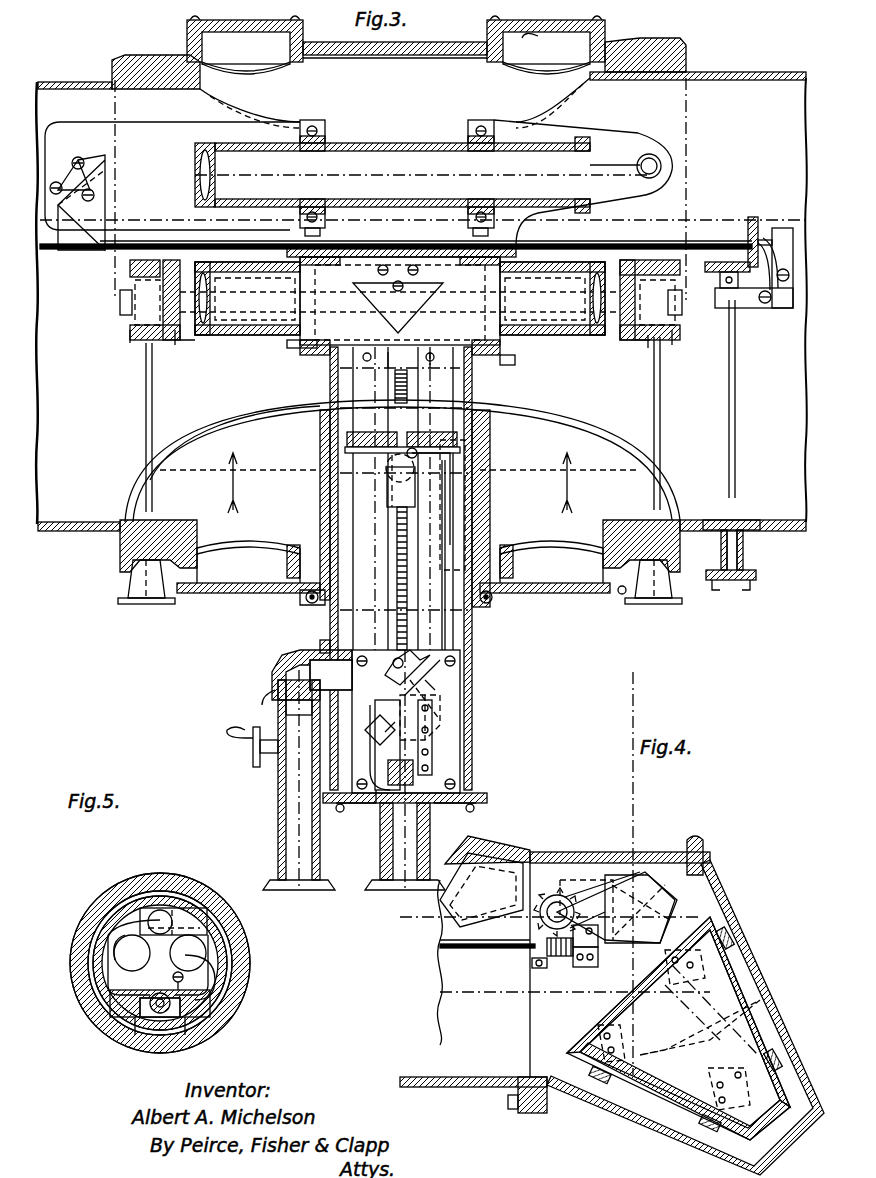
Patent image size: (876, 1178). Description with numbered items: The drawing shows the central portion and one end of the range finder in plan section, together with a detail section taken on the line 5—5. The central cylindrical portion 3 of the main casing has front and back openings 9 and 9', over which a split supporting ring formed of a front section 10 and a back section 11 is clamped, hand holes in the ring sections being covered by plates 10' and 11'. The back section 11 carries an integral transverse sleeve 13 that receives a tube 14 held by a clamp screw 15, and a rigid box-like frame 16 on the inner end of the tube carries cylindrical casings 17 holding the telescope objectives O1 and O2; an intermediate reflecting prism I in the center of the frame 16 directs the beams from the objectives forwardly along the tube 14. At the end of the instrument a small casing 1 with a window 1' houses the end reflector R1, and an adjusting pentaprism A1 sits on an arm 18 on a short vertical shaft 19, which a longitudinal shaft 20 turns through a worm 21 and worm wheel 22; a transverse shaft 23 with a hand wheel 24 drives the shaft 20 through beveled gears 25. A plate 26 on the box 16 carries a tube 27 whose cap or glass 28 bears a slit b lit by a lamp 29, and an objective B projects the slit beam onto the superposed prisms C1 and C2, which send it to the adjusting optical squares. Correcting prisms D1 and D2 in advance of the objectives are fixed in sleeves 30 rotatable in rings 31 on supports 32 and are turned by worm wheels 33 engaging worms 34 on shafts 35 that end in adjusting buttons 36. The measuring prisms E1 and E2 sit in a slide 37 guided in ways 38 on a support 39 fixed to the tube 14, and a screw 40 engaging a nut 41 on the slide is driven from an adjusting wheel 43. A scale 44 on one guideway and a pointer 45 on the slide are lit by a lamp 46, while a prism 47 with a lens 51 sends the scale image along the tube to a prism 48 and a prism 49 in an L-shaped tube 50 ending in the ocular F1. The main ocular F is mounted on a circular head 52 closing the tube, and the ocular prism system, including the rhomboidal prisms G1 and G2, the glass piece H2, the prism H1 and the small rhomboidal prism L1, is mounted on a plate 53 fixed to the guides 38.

In FIG. 4, the casing 1 is at (612, 1017).
In FIG. 4, the window 1' is at (555, 895).
In FIG. 3, the central cylindrical portion 3 is at (742, 88).
In FIG. 3, the section line 5 is at (400, 483).
In FIG. 3, the front opening 9 is at (395, 103).
In FIG. 3, the back opening 9' is at (235, 443).
In FIG. 3, the front section of supporting ring 10 is at (645, 42).
In FIG. 3, the cover plate 10' is at (396, 45).
In FIG. 3, the back section of supporting ring 11 is at (622, 609).
In FIG. 3, the cover plate 11' is at (422, 569).
In FIG. 3, the sleeve 13 is at (490, 460).
In FIG. 5, the sleeve 13 is at (242, 1008).
In FIG. 3, the tube 14 is at (480, 700).
In FIG. 5, the tube 14 is at (250, 969).
In FIG. 3, the clamp screw 15 is at (310, 602).
In FIG. 3, the box-like frame 16 is at (515, 362).
In FIG. 3, the cylindrical casing 17 is at (292, 350).
In FIG. 4, the arm 18 is at (598, 895).
In FIG. 4, the vertical shaft 19 is at (566, 900).
In FIG. 3, the longitudinal shaft 20 is at (700, 240).
In FIG. 4, the longitudinal shaft 20 is at (494, 950).
In FIG. 4, the worm 21 is at (560, 958).
In FIG. 4, the worm wheel 22 is at (546, 856).
In FIG. 3, the transverse shaft 23 is at (736, 418).
In FIG. 3, the hand wheel 24 is at (738, 590).
In FIG. 3, the beveled gears 25 is at (750, 242).
In FIG. 3, the plate 26 is at (366, 128).
In FIG. 3, the tube 27 is at (410, 140).
In FIG. 3, the cap or glass 28 is at (598, 136).
In FIG. 3, the electric lamp 29 is at (640, 174).
In FIG. 3, the sleeve 30 is at (186, 350).
In FIG. 3, the ring 31 is at (182, 352).
In FIG. 3, the support 32 is at (255, 350).
In FIG. 3, the worm wheel 33 is at (130, 343).
In FIG. 3, the worm 34 is at (132, 302).
In FIG. 3, the shaft 35 is at (145, 432).
In FIG. 3, the adjusting button 36 is at (142, 602).
In FIG. 3, the slide 37 is at (345, 453).
In FIG. 5, the slide 37 is at (115, 972).
In FIG. 3, the guideway 38 is at (430, 352).
In FIG. 5, the guideway 38 is at (110, 1000).
In FIG. 3, the support 39 is at (388, 352).
In FIG. 5, the support 39 is at (212, 1032).
In FIG. 3, the screw 40 is at (396, 585).
In FIG. 5, the screw 40 is at (163, 1044).
In FIG. 5, the nut 41 is at (138, 1044).
In FIG. 3, the adjusting wheel 43 is at (253, 760).
In FIG. 3, the scale 44 is at (490, 507).
In FIG. 3, the pointer 45 is at (460, 497).
In FIG. 5, the pointer 45 is at (192, 978).
In FIG. 3, the electric lamp 46 is at (405, 453).
In FIG. 5, the electric lamp 46 is at (212, 956).
In FIG. 3, the prism 47 is at (388, 472).
In FIG. 5, the prism 47 is at (175, 915).
In FIG. 3, the prism 48 is at (455, 652).
In FIG. 3, the prism 49 is at (300, 677).
In FIG. 3, the L-shaped tube 50 is at (272, 697).
In FIG. 3, the lens 51 is at (394, 508).
In FIG. 5, the lens 51 is at (152, 918).
In FIG. 3, the circular head 52 is at (438, 807).
In FIG. 3, the plate 53 is at (450, 760).
In FIG. 4, the adjusting pentaprism A1 is at (735, 895).
In FIG. 3, the objective B is at (200, 176).
In FIG. 3, the prism C1 is at (102, 166).
In FIG. 3, the rhomboidal prism C2 is at (63, 252).
In FIG. 3, the correcting prism D1 is at (630, 262).
In FIG. 3, the correcting prism D2 is at (132, 310).
In FIG. 3, the measuring prism E1 is at (470, 434).
In FIG. 5, the measuring prism E1 is at (192, 950).
In FIG. 3, the measuring prism E2 is at (348, 434).
In FIG. 5, the measuring prism E2 is at (126, 954).
In FIG. 3, the ocular F is at (385, 862).
In FIG. 3, the scale ocular F1 is at (280, 812).
In FIG. 3, the rhomboidal prism G1 is at (425, 665).
In FIG. 3, the rhomboidal prism G2 is at (358, 800).
In FIG. 3, the prism H1 is at (420, 744).
In FIG. 3, the rectangular glass piece H2 is at (362, 670).
In FIG. 3, the intermediate reflecting prism I is at (428, 284).
In FIG. 3, the small rhomboidal prism L1 is at (425, 714).
In FIG. 3, the telescope objective O1 is at (592, 342).
In FIG. 3, the telescope objective O2 is at (230, 345).
In FIG. 4, the end reflector R1 is at (670, 1082).
In FIG. 3, the adjusting mark b is at (598, 167).